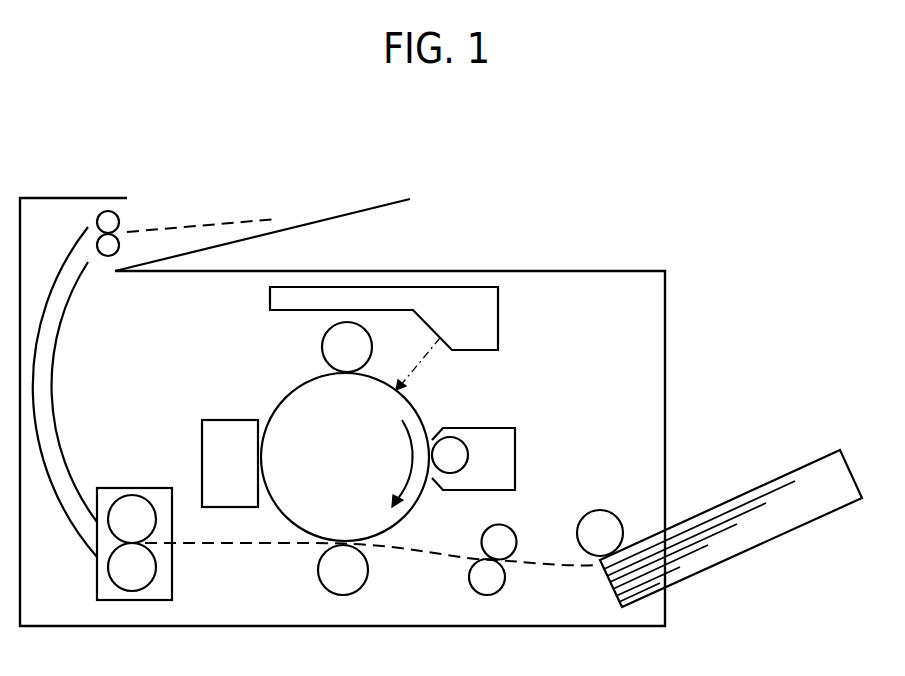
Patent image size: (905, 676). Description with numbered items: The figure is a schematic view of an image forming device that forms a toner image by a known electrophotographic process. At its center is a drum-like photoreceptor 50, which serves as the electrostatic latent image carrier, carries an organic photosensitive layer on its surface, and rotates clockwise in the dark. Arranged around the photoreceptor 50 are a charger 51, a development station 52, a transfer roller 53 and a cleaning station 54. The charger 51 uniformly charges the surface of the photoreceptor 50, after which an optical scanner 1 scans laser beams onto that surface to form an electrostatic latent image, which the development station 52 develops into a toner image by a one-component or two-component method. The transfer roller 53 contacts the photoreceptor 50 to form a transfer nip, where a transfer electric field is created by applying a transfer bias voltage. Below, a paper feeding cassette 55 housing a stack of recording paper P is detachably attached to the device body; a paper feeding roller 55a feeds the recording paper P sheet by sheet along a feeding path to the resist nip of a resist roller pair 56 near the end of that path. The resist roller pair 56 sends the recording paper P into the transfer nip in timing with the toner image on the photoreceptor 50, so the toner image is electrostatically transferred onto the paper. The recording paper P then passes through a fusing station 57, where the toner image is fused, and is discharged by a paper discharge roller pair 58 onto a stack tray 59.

The optical scanner 1 is at (494, 317).
The photoreceptor 50 is at (280, 402).
The charger 51 is at (330, 345).
The development station 52 is at (497, 428).
The transfer roller 53 is at (326, 568).
The cleaning station 54 is at (211, 440).
The paper feeding cassette 55 is at (790, 534).
The paper feeding roller 55a is at (601, 520).
The resist roller pair 56 is at (483, 598).
The fusing station 57 is at (118, 487).
The paper discharge roller pair 58 is at (97, 209).
The stack tray 59 is at (348, 212).
The recording paper P is at (772, 485).